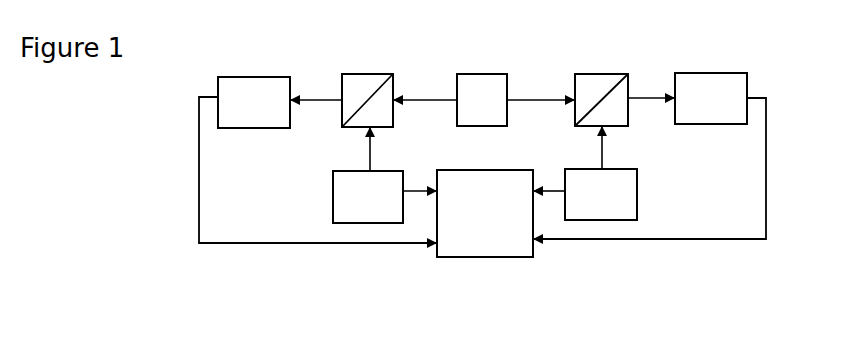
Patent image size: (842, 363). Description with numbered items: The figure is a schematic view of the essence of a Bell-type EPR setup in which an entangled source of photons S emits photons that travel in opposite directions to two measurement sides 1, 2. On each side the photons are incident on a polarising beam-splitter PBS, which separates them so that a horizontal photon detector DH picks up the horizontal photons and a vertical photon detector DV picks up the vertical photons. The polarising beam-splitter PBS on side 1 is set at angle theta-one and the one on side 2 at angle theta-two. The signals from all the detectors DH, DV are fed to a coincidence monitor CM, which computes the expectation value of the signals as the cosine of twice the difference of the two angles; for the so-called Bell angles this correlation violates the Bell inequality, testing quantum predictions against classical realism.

The first measurement side 1 is at (317, 170).
The second measurement side 2 is at (650, 168).
The entangled source of photons S is at (484, 100).
The coincidence monitor CM is at (485, 213).
The polarising beam-splitter PBS is at (360, 61).
The horizontal photon detector DH is at (482, 100).
The vertical photon detector DV is at (485, 175).